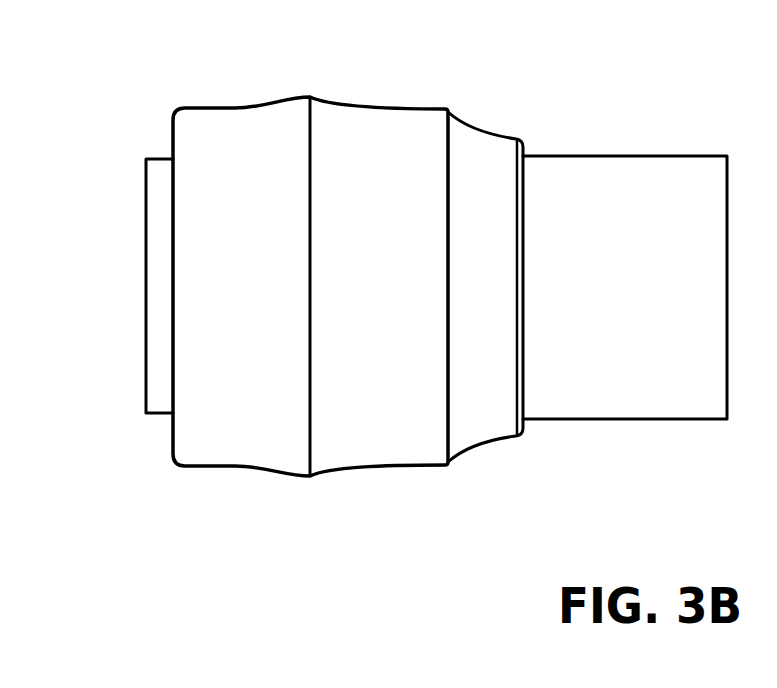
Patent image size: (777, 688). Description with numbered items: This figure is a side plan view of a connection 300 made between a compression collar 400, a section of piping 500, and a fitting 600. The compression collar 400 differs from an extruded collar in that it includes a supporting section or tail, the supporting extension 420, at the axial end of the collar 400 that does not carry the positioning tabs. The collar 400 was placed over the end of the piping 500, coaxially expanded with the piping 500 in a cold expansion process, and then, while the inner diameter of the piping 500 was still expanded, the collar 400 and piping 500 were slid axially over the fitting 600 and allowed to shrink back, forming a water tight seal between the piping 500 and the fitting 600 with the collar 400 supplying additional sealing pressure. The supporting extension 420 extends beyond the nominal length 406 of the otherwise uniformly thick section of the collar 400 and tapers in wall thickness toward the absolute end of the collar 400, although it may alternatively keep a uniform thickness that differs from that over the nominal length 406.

The connection 300 is at (407, 92).
The compression collar 400 is at (230, 179).
The nominal length 406 is at (448, 487).
The supporting extension 420 is at (528, 477).
The section of piping 500 is at (657, 165).
The fitting 600 is at (163, 235).